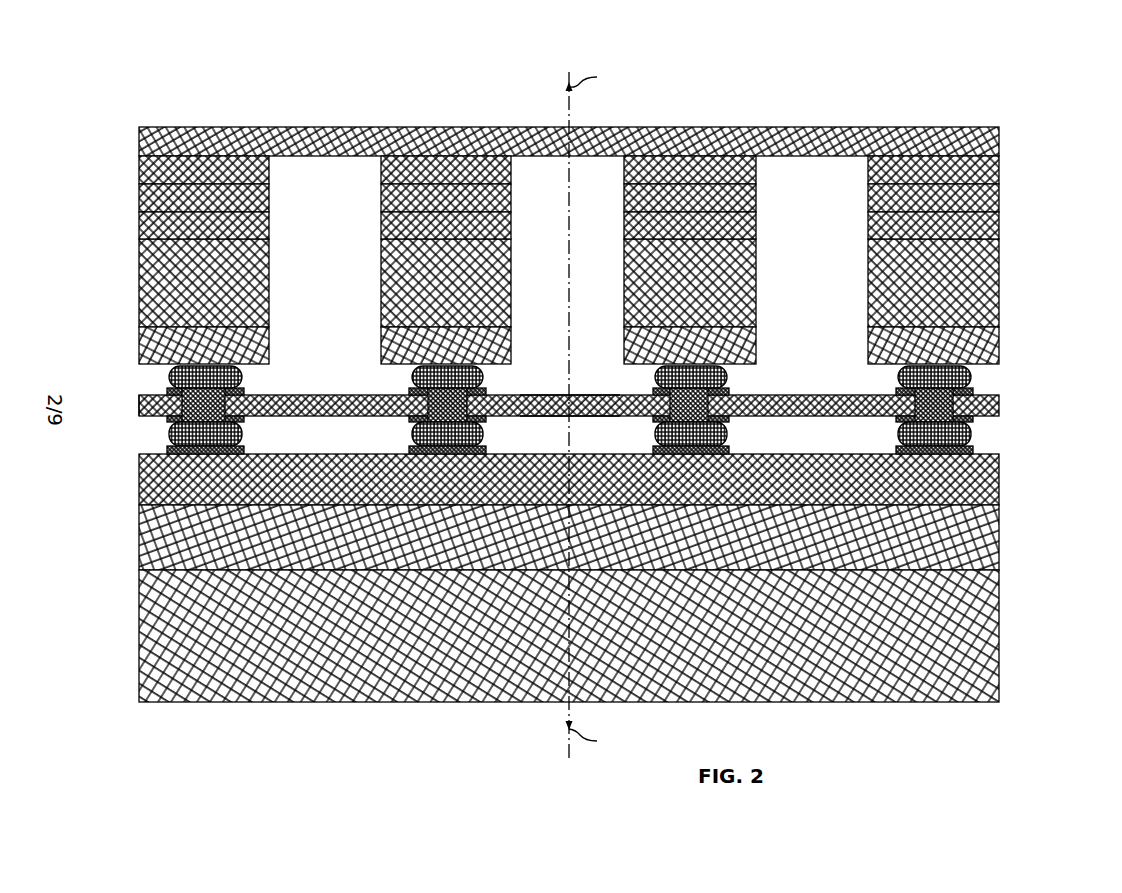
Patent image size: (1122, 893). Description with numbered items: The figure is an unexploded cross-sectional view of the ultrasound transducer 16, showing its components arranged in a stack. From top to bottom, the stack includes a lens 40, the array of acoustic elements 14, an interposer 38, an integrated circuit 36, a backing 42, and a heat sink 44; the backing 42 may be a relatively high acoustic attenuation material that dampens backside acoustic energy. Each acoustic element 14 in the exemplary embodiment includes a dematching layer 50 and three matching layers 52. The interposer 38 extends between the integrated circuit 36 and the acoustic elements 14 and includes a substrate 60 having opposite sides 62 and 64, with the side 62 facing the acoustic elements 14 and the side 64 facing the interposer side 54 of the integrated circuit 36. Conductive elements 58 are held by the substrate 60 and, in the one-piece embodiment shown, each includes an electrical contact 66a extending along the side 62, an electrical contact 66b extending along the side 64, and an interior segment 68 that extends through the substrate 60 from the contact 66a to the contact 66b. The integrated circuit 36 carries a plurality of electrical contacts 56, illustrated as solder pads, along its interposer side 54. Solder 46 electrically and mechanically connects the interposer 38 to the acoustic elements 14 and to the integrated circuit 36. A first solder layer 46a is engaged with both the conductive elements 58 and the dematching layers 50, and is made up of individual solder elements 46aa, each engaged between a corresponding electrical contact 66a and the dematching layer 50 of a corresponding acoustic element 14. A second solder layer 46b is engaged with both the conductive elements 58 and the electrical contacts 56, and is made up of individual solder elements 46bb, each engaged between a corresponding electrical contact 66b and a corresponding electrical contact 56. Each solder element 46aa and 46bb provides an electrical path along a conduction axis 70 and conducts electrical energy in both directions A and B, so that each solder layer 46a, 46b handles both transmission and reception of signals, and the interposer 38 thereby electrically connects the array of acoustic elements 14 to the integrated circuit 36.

The ultrasound transducer 16 is at (147, 88).
The conduction axis 70 is at (569, 113).
The lens 40 is at (960, 121).
The matching layers 52 is at (145, 172).
The acoustic elements 14 is at (579, 255).
The dematching layer 50 is at (150, 352).
The solder 46 is at (596, 424).
The first solder layer 46a is at (1032, 380).
The second solder layer 46b is at (1032, 437).
The individual solder elements 46aa is at (172, 380).
The individual solder elements 46bb is at (412, 437).
The conductive elements 58 is at (182, 417).
The interior segment 68 is at (708, 406).
The electrical contacts 66a is at (244, 391).
The electrical contacts 66b is at (170, 421).
The substrate 60 is at (140, 405).
The side 62 is at (576, 390).
The side 64 is at (580, 421).
The interposer 38 is at (1006, 400).
The electrical contacts 56 is at (150, 454).
The interposer side 54 is at (985, 443).
The integrated circuit 36 is at (1006, 475).
The backing 42 is at (1006, 543).
The heat sink 44 is at (1006, 652).